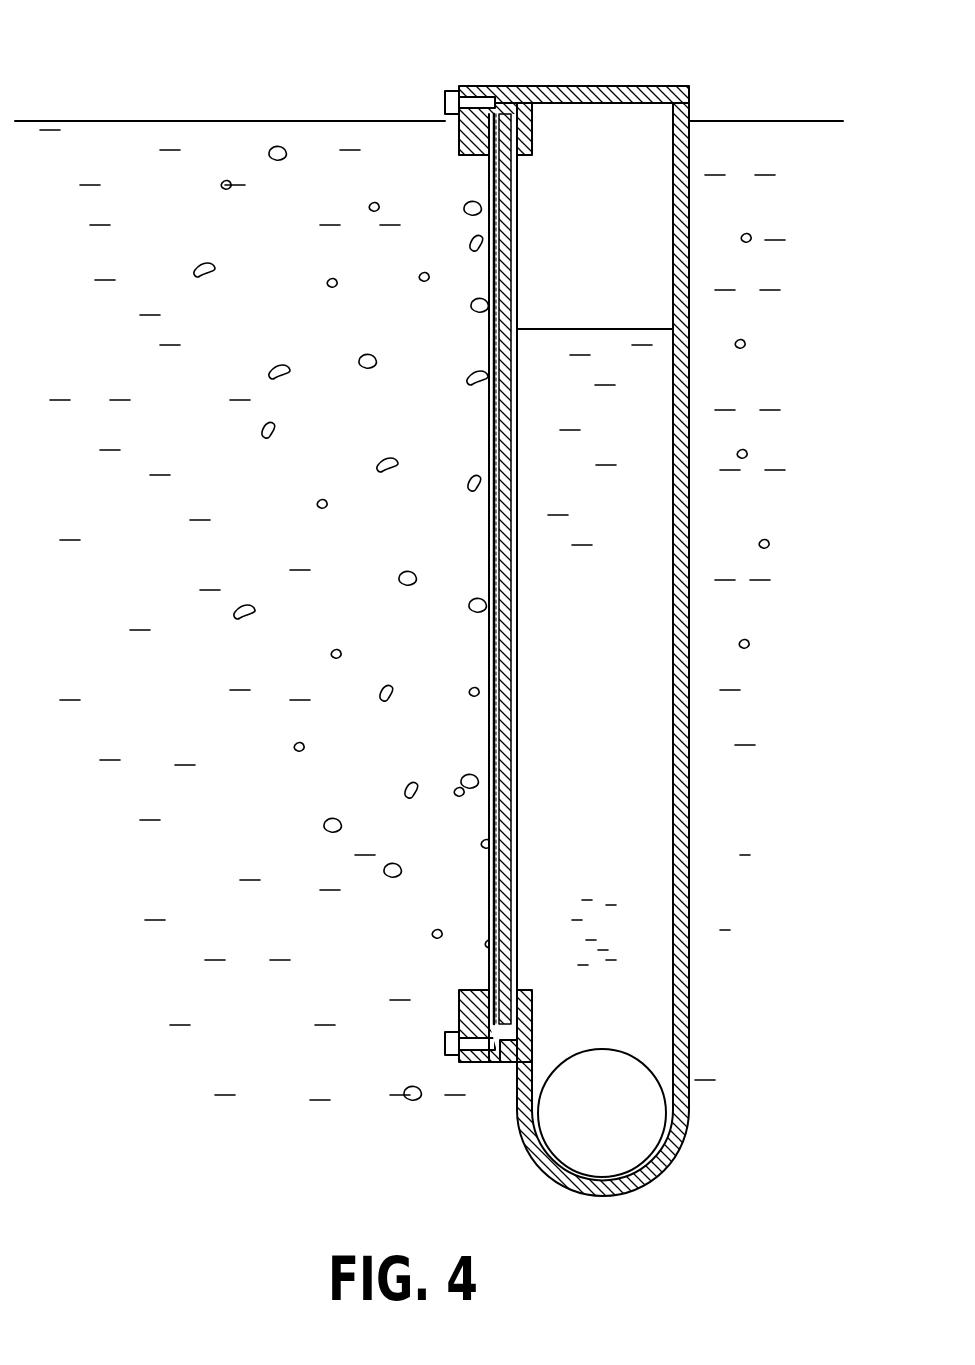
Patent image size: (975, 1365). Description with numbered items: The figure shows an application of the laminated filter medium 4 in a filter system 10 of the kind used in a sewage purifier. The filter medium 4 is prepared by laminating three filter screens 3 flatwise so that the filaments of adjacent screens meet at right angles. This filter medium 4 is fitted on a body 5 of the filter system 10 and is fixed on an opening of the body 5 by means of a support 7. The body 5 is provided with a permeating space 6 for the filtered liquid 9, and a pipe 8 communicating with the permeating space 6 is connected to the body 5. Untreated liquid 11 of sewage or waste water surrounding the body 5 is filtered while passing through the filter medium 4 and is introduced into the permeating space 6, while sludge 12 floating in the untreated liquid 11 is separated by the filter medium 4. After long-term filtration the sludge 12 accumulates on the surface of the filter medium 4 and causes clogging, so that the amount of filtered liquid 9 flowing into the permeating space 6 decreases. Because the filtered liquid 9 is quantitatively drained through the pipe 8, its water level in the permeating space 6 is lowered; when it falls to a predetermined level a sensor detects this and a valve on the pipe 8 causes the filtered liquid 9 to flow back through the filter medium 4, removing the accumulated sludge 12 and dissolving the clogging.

The filter screen 3 is at (489, 582).
The filter medium 4 is at (474, 175).
The body 5 is at (625, 86).
The permeating space 6 is at (650, 132).
The support 7 is at (489, 575).
The pipe 8 is at (614, 1078).
The filtered liquid 9 is at (598, 345).
The filter system 10 is at (532, 598).
The untreated liquid 11 is at (118, 155).
The sludge 12 is at (290, 157).